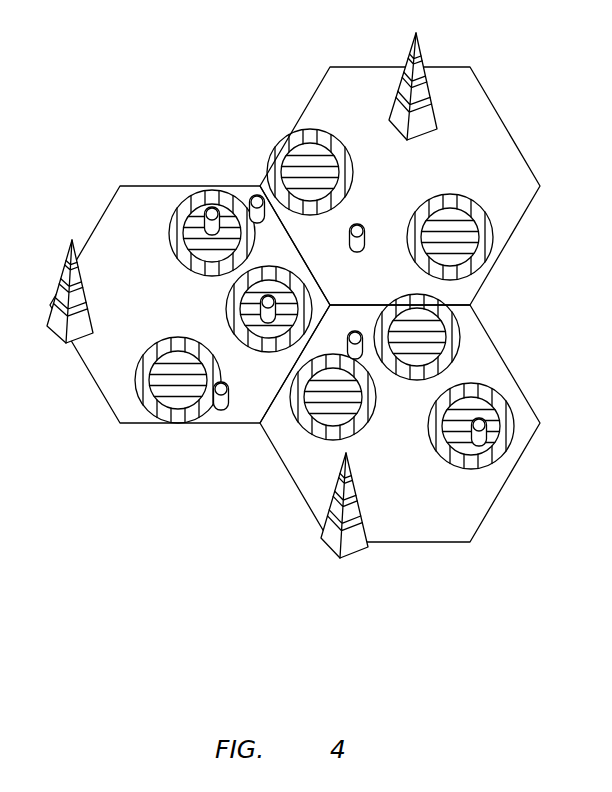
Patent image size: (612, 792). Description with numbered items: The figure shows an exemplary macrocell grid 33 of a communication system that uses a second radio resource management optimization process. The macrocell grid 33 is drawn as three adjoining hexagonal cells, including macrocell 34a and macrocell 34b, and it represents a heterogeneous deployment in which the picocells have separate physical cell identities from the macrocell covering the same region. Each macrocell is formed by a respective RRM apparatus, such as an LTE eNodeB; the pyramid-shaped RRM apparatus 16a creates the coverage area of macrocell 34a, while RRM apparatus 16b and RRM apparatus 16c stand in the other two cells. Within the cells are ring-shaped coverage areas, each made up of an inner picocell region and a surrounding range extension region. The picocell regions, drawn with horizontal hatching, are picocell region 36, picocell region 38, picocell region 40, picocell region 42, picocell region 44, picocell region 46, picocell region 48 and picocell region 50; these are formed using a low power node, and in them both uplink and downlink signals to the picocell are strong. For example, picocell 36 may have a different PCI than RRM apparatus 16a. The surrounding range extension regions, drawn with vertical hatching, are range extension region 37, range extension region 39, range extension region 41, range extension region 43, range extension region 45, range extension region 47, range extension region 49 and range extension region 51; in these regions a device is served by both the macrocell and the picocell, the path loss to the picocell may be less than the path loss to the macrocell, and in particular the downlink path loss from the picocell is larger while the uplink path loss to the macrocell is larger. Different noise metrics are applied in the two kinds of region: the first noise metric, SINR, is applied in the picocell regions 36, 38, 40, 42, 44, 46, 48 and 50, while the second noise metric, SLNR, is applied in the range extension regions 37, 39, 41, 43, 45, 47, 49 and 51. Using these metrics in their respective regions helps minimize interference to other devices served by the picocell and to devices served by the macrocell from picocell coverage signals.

The macrocell grid 33 is at (520, 281).
The macrocell 34a is at (117, 197).
The macrocell 34b is at (303, 492).
The RRM apparatus 16a is at (64, 258).
The RRM apparatus 16b is at (325, 547).
The RRM apparatus 16c is at (419, 53).
The picocell region 36 is at (177, 400).
The range extension region 37 is at (168, 345).
The picocell region 38 is at (250, 310).
The range extension region 39 is at (282, 343).
The picocell region 40 is at (223, 207).
The range extension region 41 is at (183, 220).
The picocell region 42 is at (457, 443).
The range extension region 43 is at (508, 415).
The picocell region 44 is at (433, 338).
The range extension region 45 is at (440, 362).
The picocell region 46 is at (340, 412).
The range extension region 47 is at (370, 405).
The picocell region 48 is at (452, 222).
The range extension region 49 is at (478, 213).
The picocell region 50 is at (328, 173).
The range extension region 51 is at (310, 130).